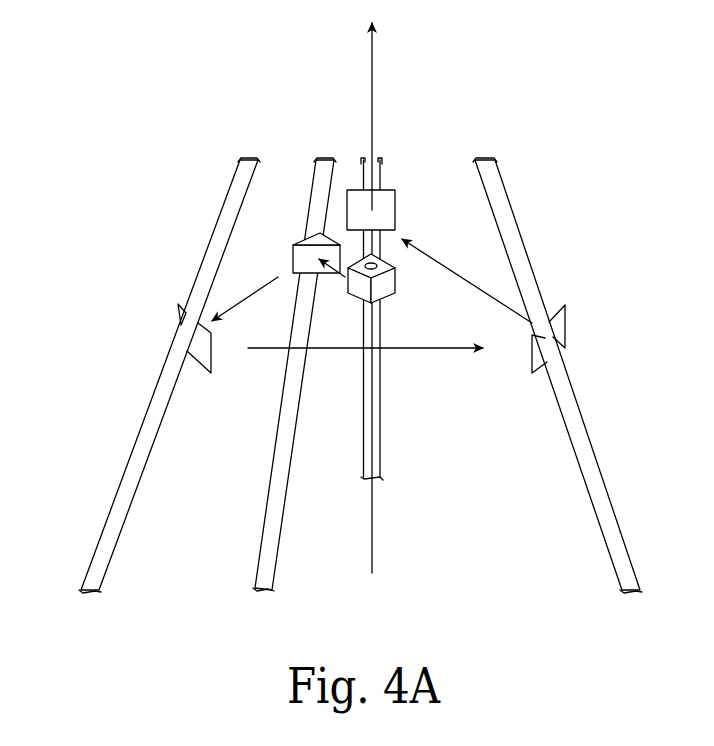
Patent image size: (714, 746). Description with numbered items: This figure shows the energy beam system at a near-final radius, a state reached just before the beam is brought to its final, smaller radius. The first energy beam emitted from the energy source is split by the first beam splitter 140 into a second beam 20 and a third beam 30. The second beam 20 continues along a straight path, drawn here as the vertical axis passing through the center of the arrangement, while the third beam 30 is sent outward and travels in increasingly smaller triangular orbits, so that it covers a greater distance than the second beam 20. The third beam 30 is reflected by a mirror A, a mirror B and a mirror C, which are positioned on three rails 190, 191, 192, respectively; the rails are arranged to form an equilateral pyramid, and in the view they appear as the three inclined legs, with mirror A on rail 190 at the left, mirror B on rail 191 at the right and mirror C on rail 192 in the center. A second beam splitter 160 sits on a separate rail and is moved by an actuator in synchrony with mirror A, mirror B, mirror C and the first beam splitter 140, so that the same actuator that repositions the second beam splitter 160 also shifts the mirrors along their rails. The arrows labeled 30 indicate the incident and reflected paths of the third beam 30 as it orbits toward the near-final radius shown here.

The second beam 20 is at (373, 123).
The third beam 30 is at (242, 300).
The first beam splitter 140 is at (383, 290).
The second beam splitter 160 is at (293, 253).
The rail 190 is at (120, 480).
The rail 191 is at (607, 490).
The rail 192 is at (381, 420).
The mirror A is at (180, 310).
The mirror B is at (556, 333).
The mirror C is at (387, 205).